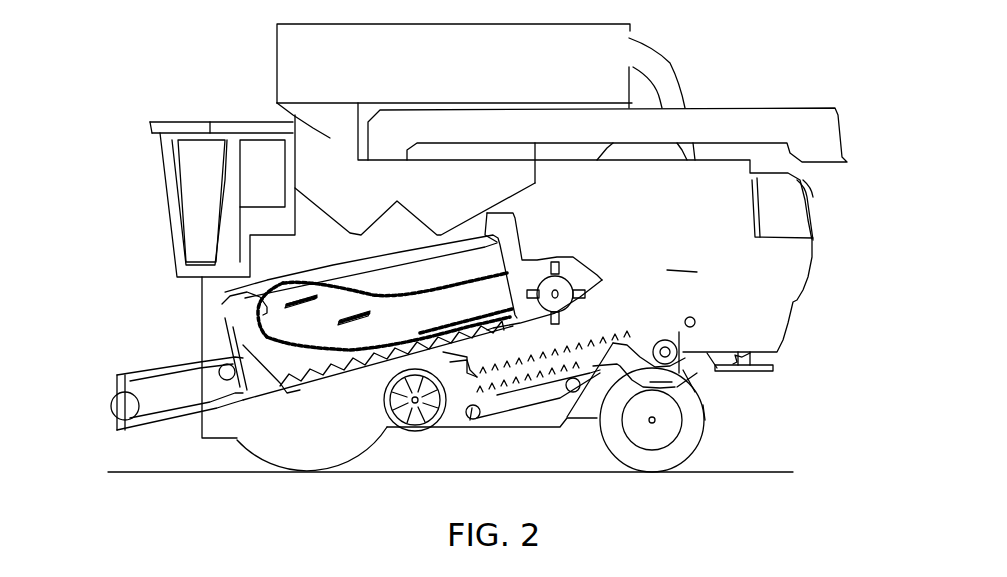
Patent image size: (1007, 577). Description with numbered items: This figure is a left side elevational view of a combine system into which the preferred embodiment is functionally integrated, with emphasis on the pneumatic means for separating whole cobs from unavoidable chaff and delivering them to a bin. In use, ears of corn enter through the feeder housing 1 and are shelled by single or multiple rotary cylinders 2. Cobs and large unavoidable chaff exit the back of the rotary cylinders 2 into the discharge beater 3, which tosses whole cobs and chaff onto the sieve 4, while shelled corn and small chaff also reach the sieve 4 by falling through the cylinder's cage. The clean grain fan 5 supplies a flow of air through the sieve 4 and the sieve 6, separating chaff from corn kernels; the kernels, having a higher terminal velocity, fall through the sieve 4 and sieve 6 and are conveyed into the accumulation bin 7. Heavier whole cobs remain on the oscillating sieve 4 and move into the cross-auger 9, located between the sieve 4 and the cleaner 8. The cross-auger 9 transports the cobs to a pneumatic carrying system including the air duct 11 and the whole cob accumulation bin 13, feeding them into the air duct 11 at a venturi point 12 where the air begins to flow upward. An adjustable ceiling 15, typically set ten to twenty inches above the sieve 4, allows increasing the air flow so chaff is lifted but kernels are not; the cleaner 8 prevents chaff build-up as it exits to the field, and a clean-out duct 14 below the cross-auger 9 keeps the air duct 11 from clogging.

The feeder housing 1 is at (141, 385).
The rotary cylinders 2 is at (278, 317).
The discharge beater 3 is at (664, 268).
The sieve 4 is at (535, 287).
The clean grain fan 5 is at (429, 418).
The sieve 6 is at (536, 400).
The accumulation bin 7 is at (224, 184).
The cleaner 8 is at (770, 363).
The cross-auger 9 is at (754, 391).
The air duct 11 is at (716, 73).
The venturi point 12 is at (773, 415).
The whole cob accumulation bin 13 is at (535, 58).
The clean-out duct 14 is at (671, 421).
The ceiling 15 is at (766, 258).